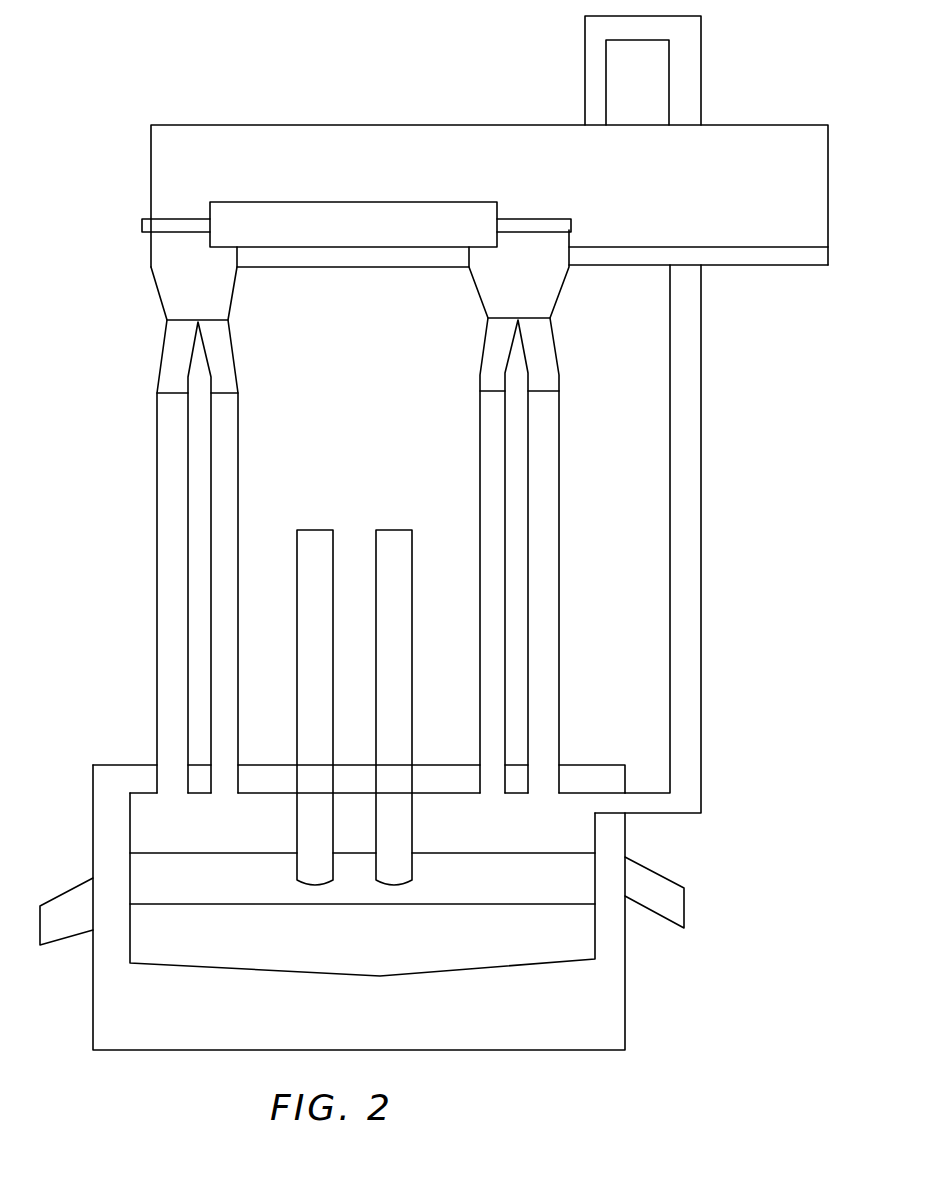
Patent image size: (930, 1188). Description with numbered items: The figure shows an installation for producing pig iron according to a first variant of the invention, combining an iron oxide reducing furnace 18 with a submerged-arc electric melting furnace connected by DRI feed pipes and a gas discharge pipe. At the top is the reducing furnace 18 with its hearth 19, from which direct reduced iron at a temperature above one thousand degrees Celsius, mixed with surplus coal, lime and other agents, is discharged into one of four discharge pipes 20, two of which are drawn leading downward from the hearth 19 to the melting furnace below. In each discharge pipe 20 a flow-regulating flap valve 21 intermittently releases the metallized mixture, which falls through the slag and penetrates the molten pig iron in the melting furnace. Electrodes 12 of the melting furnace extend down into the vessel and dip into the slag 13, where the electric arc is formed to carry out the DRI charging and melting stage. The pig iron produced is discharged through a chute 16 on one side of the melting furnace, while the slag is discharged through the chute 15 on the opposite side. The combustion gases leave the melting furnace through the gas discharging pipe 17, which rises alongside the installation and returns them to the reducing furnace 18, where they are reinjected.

The electrodes 12 is at (393, 538).
The slag 13 is at (543, 890).
The chute 15 is at (673, 897).
The chute 16 is at (67, 900).
The gas discharge pipe 17 is at (695, 441).
The iron oxide reducing furnace 18 is at (160, 173).
The hearth 19 is at (363, 238).
The discharge pipes 20 is at (173, 573).
The flow-regulating flap valve 21 is at (225, 393).